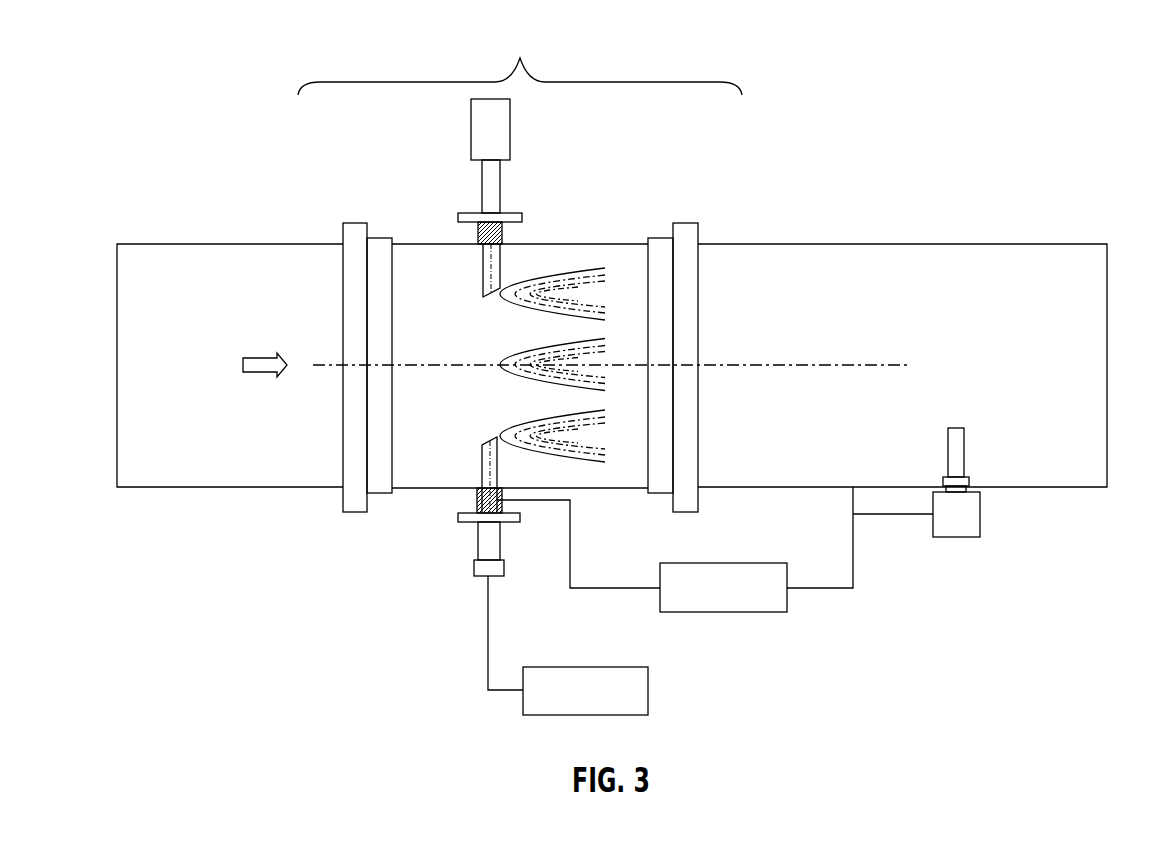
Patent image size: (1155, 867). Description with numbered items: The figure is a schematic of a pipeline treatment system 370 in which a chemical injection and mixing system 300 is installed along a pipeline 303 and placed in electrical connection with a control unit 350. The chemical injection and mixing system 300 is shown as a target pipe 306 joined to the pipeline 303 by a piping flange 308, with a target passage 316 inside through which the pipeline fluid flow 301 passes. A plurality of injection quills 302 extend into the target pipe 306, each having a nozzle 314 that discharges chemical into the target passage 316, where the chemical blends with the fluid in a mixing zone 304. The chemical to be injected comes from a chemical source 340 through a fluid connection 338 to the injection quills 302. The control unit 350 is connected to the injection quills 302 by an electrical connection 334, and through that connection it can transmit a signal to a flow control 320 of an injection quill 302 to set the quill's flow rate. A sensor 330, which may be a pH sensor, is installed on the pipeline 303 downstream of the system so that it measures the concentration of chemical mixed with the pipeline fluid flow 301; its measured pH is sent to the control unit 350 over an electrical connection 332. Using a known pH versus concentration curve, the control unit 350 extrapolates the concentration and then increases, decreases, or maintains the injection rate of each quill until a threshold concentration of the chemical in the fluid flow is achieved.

The chemical injection and mixing system 300 is at (520, 61).
The pipeline fluid flow 301 is at (260, 376).
The injection quill 302 is at (493, 222).
The pipeline 303 is at (160, 245).
The mixing zone 304 is at (549, 272).
The target pipe 306 is at (630, 243).
The piping flange 308 is at (686, 222).
The nozzle 314 is at (481, 447).
The target passage 316 is at (457, 312).
The flow control 320 is at (472, 501).
The sensor 330 is at (982, 513).
The electrical connection 332 is at (854, 553).
The electrical connection 334 is at (571, 532).
The fluid connection 338 is at (487, 673).
The chemical source 340 is at (607, 705).
The control unit 350 is at (745, 602).
The pipeline treatment system 370 is at (106, 126).